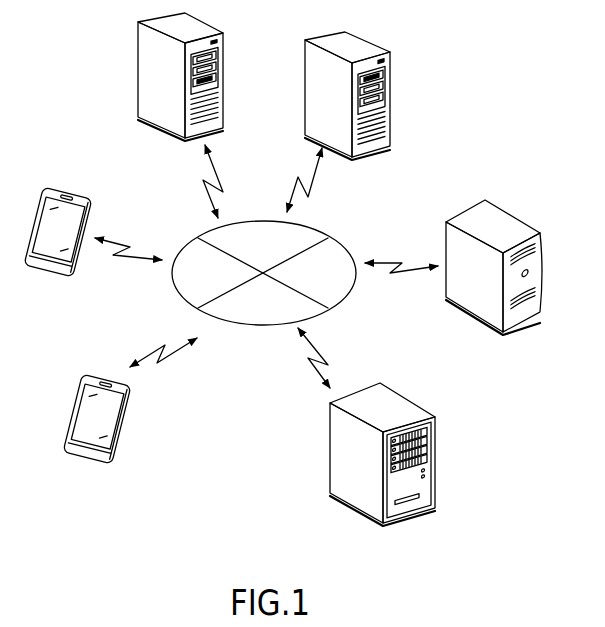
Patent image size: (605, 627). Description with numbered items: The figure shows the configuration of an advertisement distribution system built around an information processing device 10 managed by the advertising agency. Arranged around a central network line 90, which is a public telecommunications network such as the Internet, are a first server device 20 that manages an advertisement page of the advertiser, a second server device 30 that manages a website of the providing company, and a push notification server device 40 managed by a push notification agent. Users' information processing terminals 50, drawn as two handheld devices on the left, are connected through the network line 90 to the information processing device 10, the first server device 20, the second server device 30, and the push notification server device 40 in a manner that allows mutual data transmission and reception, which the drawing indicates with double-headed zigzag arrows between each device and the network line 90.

The information processing device 10 is at (541, 283).
The first server device 20 is at (222, 62).
The second server device 30 is at (378, 43).
The push notification server device 40 is at (436, 432).
The information processing terminal 50 is at (66, 195).
The network line 90 is at (323, 232).